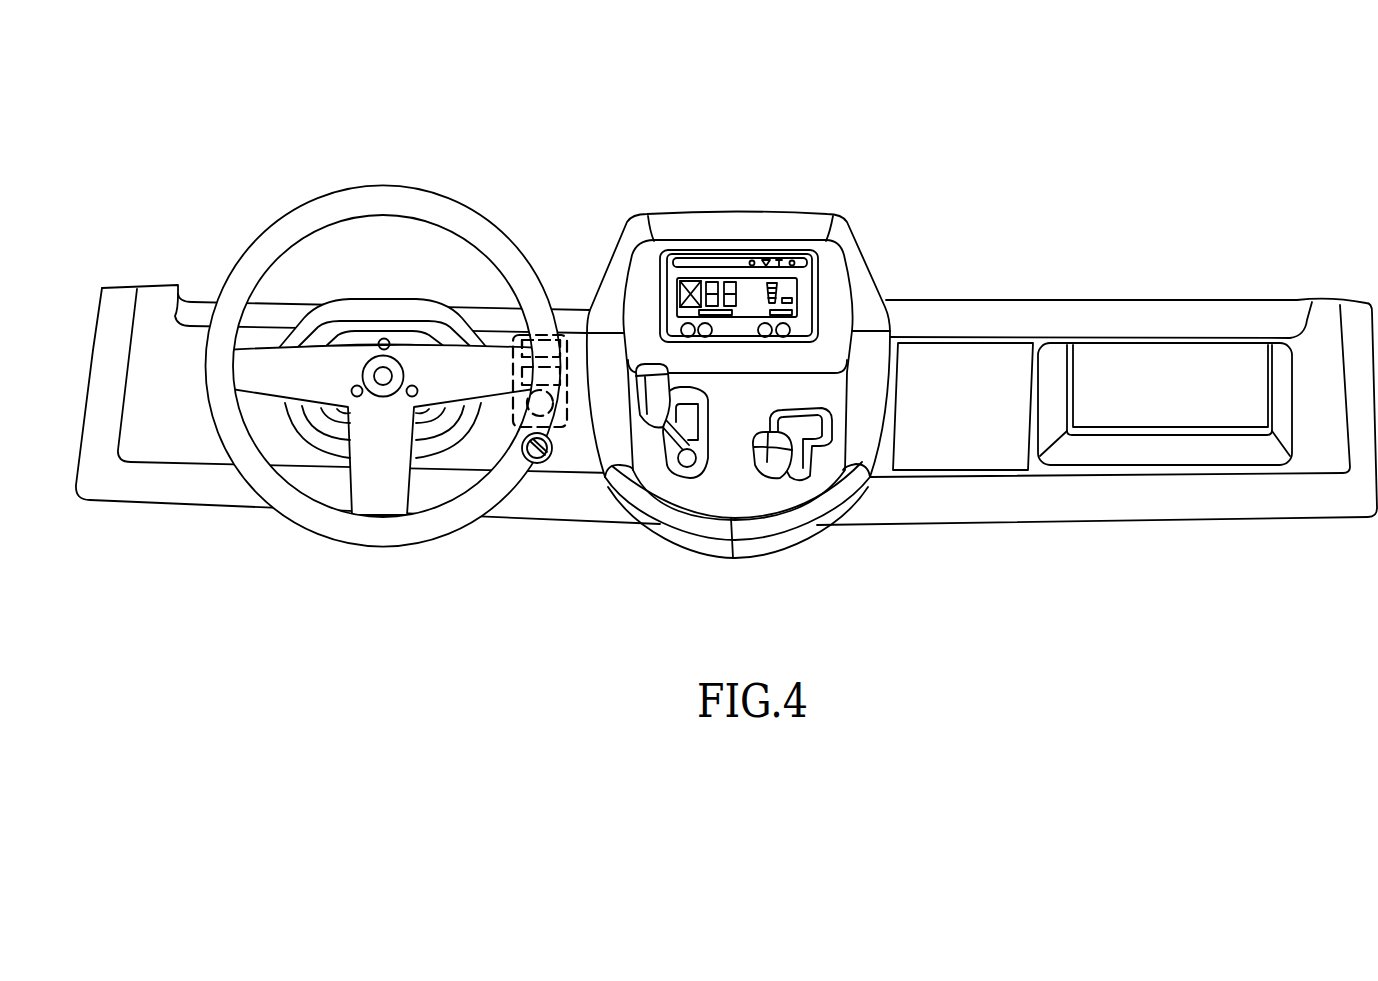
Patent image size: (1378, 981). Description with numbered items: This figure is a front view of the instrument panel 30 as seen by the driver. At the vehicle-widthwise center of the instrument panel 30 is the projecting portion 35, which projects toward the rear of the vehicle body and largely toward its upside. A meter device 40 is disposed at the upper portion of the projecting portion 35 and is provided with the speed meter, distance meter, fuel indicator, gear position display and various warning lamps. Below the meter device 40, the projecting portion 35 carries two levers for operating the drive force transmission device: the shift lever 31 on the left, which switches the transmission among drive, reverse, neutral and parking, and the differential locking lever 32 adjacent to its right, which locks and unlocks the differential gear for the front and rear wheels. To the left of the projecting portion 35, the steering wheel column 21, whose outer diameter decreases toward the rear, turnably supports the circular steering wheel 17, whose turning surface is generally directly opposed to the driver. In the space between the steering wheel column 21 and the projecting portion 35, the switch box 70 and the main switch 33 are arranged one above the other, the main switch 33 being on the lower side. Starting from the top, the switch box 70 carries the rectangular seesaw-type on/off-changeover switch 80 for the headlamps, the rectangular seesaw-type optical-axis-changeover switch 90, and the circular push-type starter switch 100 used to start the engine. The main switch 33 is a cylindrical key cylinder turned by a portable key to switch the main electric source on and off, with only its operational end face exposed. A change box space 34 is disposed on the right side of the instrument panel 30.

The steering wheel 17 is at (329, 204).
The steering wheel column 21 is at (417, 315).
The instrument panel 30 is at (988, 300).
The shift lever 31 is at (652, 408).
The differential locking lever 32 is at (768, 467).
The main switch 33 is at (545, 468).
The change box space 34 is at (1165, 397).
The projecting portion 35 is at (623, 260).
The meter device 40 is at (727, 246).
The switch box 70 is at (572, 440).
The on/off-changeover switch 80 is at (535, 336).
The optical-axis-changeover switch 90 is at (522, 372).
The starter switch 100 is at (553, 407).